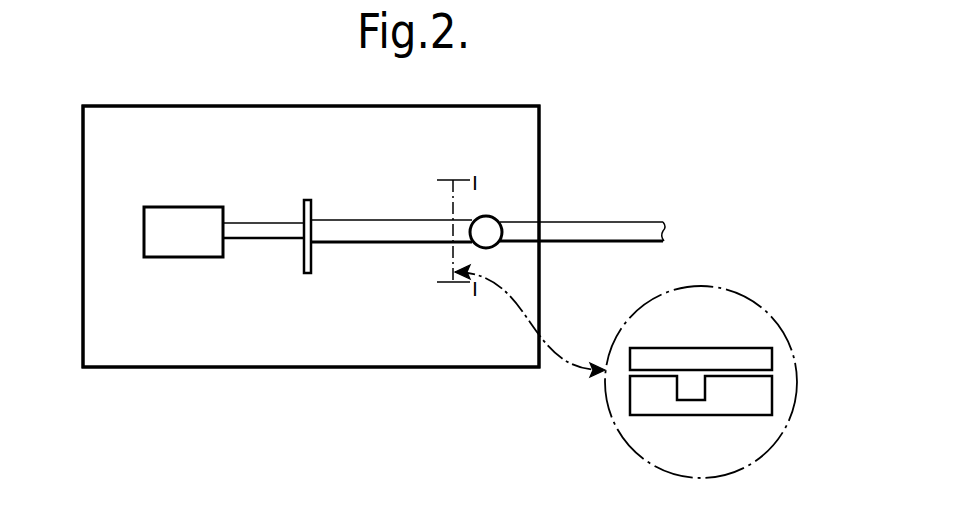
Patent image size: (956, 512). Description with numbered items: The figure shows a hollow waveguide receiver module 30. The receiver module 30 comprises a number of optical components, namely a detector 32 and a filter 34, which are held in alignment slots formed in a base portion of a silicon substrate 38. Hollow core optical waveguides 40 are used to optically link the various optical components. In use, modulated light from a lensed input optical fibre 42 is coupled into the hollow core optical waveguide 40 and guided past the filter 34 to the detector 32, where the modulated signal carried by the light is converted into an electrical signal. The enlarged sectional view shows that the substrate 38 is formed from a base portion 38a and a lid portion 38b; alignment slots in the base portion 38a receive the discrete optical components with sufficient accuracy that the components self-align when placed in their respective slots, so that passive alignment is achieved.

The receiver module 30 is at (547, 93).
The detector 32 is at (200, 244).
The filter 34 is at (309, 205).
The silicon substrate 38 is at (189, 337).
The base portion 38a is at (765, 408).
The lid portion 38b is at (756, 354).
The hollow core optical waveguide 40 is at (243, 228).
The lensed input optical fibre 42 is at (600, 228).